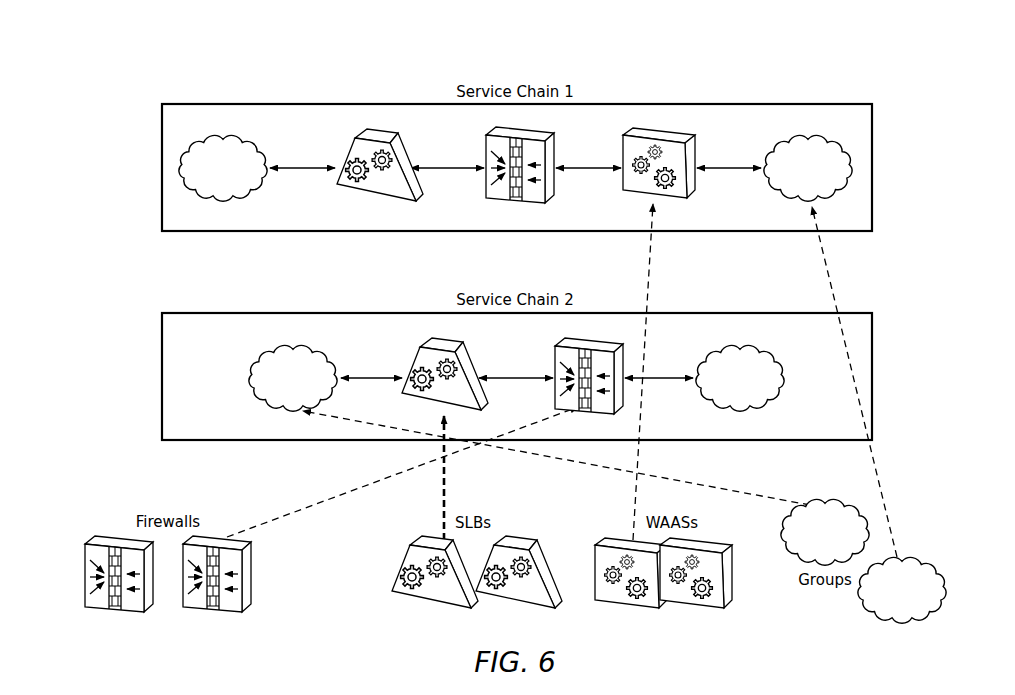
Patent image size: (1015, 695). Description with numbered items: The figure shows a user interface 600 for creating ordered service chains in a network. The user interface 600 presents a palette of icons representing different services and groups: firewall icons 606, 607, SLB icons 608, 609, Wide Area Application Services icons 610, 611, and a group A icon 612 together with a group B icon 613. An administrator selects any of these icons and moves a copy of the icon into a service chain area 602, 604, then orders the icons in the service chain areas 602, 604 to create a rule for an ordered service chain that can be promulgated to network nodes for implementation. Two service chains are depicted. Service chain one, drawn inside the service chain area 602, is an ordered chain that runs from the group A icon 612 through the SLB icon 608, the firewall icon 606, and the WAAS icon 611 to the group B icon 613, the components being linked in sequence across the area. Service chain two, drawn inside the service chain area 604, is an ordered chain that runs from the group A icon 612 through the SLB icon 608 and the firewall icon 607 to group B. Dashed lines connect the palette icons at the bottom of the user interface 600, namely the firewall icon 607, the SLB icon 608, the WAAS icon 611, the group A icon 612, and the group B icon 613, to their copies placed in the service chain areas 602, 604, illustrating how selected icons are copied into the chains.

The user interface 600 is at (150, 80).
The service chain area 602 is at (873, 163).
The service chain area 604 is at (873, 374).
The firewall icon 606 is at (554, 179).
The firewall icon 607 is at (580, 340).
The SLB icon 608 is at (422, 185).
The SLB icon 609 is at (522, 536).
The Wide Area Application Services (WAAS) icon 610 is at (623, 598).
The Wide Area Application Services (WAAS) icon 611 is at (696, 181).
The group A icon 612 is at (268, 151).
The group B icon 613 is at (768, 148).